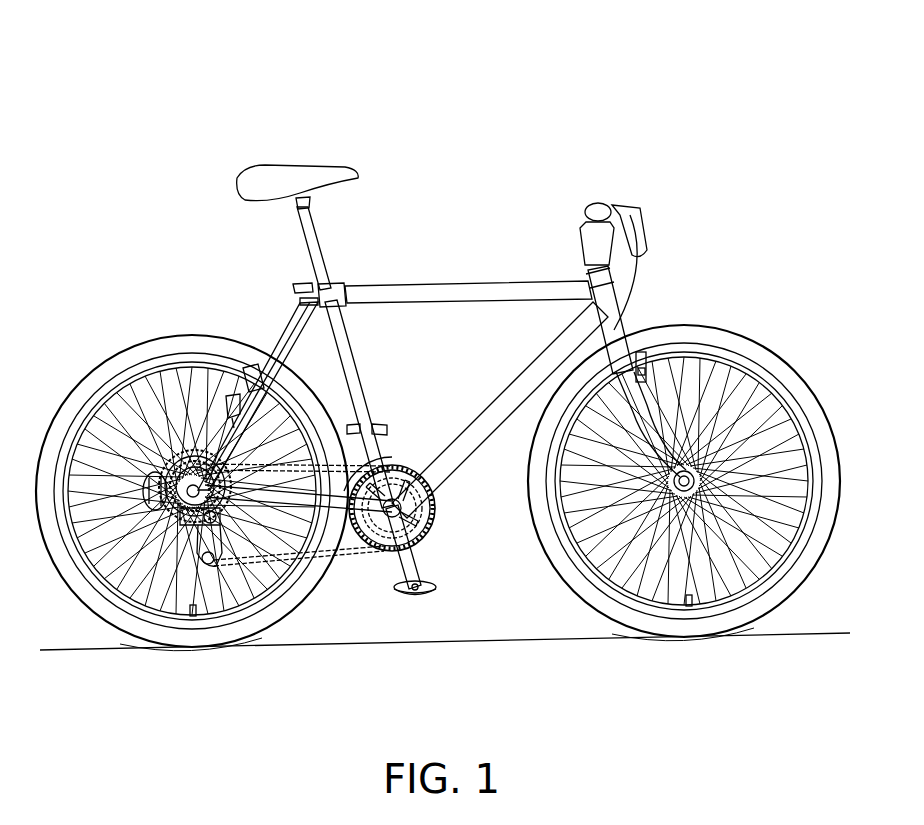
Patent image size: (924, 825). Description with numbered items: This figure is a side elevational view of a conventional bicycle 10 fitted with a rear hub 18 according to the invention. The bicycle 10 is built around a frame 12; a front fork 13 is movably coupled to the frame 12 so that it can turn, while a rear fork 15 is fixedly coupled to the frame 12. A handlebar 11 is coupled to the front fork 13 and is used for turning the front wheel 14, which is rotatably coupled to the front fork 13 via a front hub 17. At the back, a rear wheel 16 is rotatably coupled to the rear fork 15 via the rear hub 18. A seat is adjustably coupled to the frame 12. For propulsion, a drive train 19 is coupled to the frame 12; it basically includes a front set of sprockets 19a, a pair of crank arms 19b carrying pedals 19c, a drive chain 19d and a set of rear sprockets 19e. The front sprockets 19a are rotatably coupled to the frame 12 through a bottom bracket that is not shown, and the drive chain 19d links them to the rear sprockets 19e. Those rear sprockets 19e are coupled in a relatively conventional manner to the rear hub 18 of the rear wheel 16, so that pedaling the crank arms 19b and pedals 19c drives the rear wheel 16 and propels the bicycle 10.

The bicycle 10 is at (632, 112).
The handlebar 11 is at (599, 202).
The frame 12 is at (430, 283).
The front fork 13 is at (631, 337).
The front wheel 14 is at (772, 344).
The rear fork 15 is at (275, 343).
The rear wheel 16 is at (62, 394).
The front hub 17 is at (767, 433).
The rear hub 18 is at (128, 493).
The drive train 19 is at (351, 579).
The front set of sprockets 19a is at (367, 557).
The crank arms 19b is at (422, 553).
The pedals 19c is at (430, 594).
The drive chain 19d is at (343, 557).
The set of rear sprockets 19e is at (157, 513).